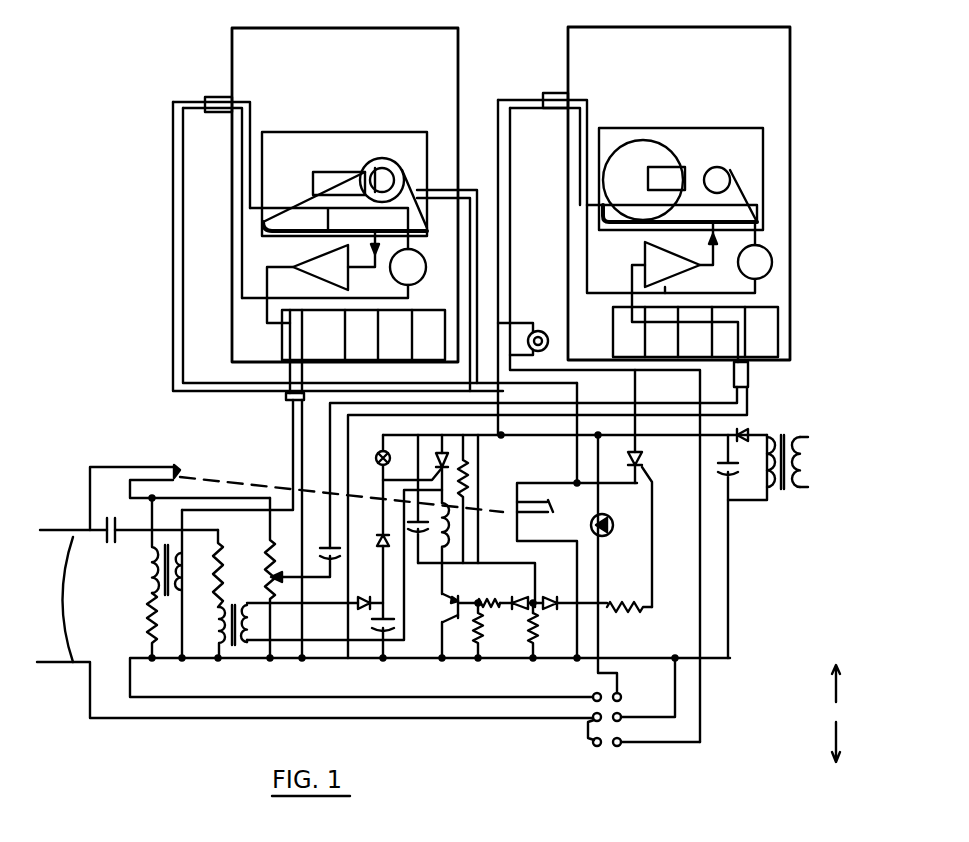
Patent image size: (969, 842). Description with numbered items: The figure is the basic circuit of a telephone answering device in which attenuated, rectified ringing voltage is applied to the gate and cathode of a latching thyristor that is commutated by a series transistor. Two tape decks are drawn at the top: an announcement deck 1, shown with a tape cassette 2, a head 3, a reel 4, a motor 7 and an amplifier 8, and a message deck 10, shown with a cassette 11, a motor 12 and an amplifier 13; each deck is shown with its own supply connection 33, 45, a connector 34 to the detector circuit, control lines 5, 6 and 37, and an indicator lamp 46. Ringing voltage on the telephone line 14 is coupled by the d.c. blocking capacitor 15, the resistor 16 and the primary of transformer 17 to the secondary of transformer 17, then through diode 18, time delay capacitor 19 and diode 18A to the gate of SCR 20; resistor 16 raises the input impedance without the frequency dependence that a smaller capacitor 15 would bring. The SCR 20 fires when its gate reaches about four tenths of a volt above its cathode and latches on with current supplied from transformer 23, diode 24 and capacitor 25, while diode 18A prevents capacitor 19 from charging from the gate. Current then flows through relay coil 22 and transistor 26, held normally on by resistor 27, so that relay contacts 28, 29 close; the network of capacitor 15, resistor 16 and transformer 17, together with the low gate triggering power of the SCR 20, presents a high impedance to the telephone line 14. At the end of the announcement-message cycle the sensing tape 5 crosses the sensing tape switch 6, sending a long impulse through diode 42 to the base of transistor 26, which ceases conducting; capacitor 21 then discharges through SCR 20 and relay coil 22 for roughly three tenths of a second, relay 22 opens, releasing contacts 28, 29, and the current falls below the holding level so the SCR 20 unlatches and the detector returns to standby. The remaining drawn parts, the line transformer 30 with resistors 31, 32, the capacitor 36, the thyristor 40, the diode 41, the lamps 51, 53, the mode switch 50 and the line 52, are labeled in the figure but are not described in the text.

The announcement deck 1 is at (346, 28).
The tape cassette 2 is at (358, 132).
The tape head 3 is at (338, 200).
The tape reel 4 is at (331, 186).
The sensing tape 5 is at (426, 206).
The sensing tape switch 6 is at (418, 186).
The motor 7 is at (423, 258).
The amplifier 8 is at (312, 262).
The message deck 10 is at (672, 26).
The tape cassette 11 is at (733, 128).
The motor 12 is at (765, 256).
The amplifier 13 is at (644, 262).
The telephone line 14 is at (70, 556).
The d.c. blocking capacitor 15 is at (119, 545).
The resistor 16 is at (224, 590).
The transformer 17 is at (222, 628).
The diode 18 is at (361, 598).
The diode 18A is at (378, 542).
The time delay capacitor 19 is at (395, 633).
The SCR 20 is at (446, 499).
The capacitor 21 is at (436, 562).
The relay coil 22 is at (454, 537).
The transformer 23 is at (804, 440).
The diode 24 is at (750, 428).
The capacitor 25 is at (740, 476).
The transistor 26 is at (443, 606).
The resistor 27 is at (486, 640).
The relay contact 28 is at (176, 468).
The relay contact 29 is at (577, 520).
The transformer 30 is at (153, 568).
The resistor 31 is at (145, 632).
The variable resistor 32 is at (266, 560).
The power supply line 33 is at (172, 272).
The connector 34 is at (294, 426).
The capacitor 36 is at (329, 546).
The control line 37 is at (330, 464).
The thyristor 40 is at (645, 456).
The diode 41 is at (562, 590).
The diode 42 is at (510, 598).
The power supply line 45 is at (504, 266).
The lamp 46 is at (542, 331).
The mode switch 50 is at (594, 747).
The lamp 51 is at (612, 534).
The line 52 is at (434, 712).
The lamp 53 is at (380, 465).